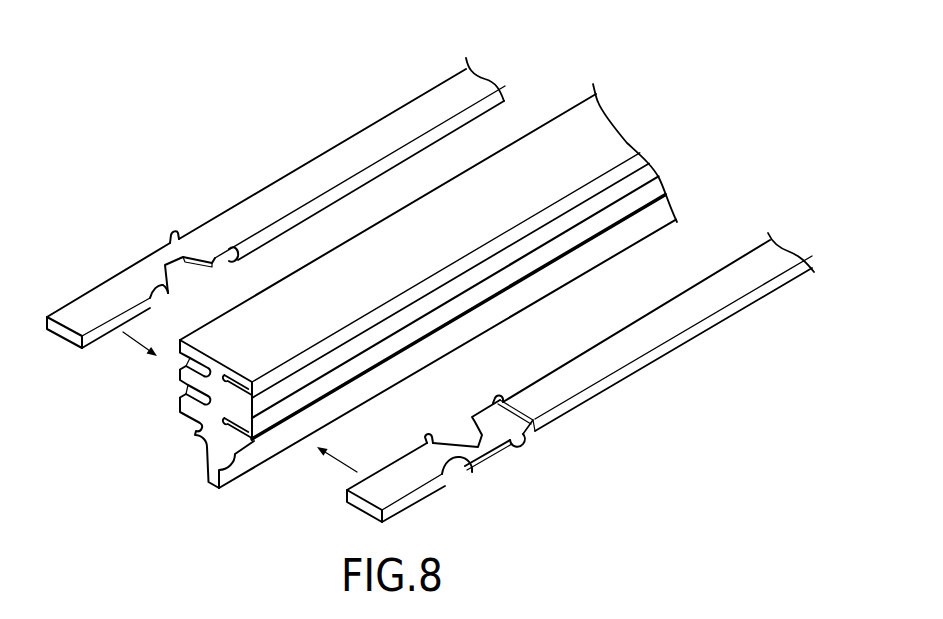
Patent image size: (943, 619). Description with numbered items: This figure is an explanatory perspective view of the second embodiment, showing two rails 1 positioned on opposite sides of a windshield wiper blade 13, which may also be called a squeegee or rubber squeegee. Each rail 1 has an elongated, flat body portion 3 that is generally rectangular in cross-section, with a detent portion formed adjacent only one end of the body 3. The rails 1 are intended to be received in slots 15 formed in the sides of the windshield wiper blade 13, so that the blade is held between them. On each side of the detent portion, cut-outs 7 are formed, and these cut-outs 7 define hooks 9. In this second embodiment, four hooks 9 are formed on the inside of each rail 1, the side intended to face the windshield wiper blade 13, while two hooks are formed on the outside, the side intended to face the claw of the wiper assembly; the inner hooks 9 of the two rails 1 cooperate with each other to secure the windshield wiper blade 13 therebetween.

The rail 1 is at (313, 143).
The body portion 3 is at (397, 135).
The cut-outs 7 is at (148, 253).
The hooks 9 is at (172, 236).
The windshield wiper blade 13 is at (551, 120).
The slots 15 is at (195, 363).